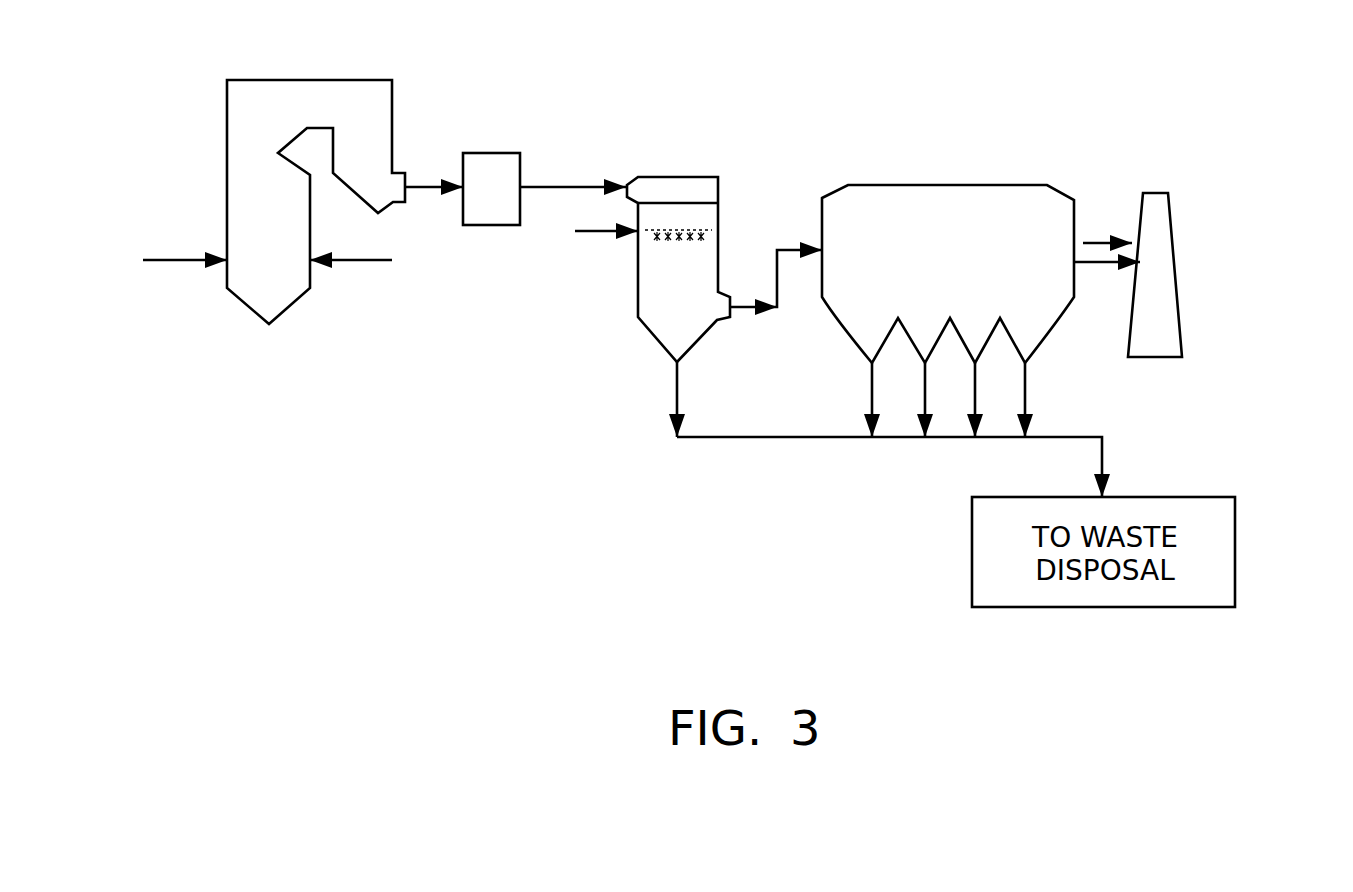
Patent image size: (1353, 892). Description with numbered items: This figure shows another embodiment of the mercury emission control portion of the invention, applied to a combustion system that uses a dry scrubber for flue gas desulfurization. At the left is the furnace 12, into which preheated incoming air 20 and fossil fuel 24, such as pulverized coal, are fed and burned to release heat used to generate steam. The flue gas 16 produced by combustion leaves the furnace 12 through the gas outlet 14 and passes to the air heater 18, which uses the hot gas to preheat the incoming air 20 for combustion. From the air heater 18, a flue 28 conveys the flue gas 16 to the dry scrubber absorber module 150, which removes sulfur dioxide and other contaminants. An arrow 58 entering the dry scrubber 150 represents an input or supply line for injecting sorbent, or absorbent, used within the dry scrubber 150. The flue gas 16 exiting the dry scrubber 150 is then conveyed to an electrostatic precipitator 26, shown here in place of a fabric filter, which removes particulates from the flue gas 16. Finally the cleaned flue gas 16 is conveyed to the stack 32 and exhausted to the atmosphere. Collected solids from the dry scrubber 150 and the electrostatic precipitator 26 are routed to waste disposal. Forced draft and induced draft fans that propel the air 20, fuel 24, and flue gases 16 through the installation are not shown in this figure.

The furnace 12 is at (285, 240).
The gas outlet 14 is at (381, 171).
The flue gas 16 is at (340, 97).
The air heater 18 is at (508, 202).
The incoming air 20 is at (175, 262).
The fossil fuel 24 is at (357, 262).
The electrostatic precipitator 26 is at (964, 260).
The flue 28 is at (548, 183).
The stack 32 is at (1162, 263).
The sorbent supply line 58 is at (598, 233).
The dry scrubber absorber module 150 is at (697, 291).